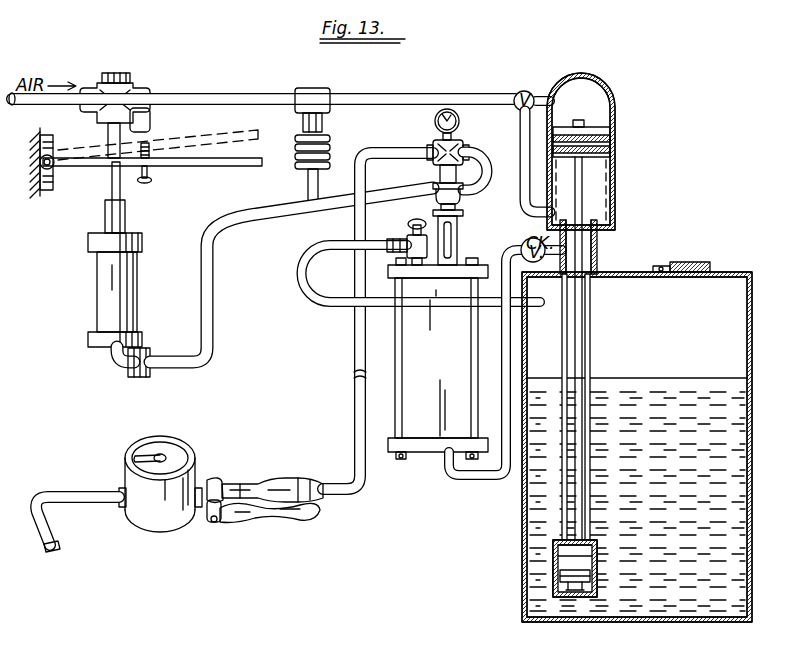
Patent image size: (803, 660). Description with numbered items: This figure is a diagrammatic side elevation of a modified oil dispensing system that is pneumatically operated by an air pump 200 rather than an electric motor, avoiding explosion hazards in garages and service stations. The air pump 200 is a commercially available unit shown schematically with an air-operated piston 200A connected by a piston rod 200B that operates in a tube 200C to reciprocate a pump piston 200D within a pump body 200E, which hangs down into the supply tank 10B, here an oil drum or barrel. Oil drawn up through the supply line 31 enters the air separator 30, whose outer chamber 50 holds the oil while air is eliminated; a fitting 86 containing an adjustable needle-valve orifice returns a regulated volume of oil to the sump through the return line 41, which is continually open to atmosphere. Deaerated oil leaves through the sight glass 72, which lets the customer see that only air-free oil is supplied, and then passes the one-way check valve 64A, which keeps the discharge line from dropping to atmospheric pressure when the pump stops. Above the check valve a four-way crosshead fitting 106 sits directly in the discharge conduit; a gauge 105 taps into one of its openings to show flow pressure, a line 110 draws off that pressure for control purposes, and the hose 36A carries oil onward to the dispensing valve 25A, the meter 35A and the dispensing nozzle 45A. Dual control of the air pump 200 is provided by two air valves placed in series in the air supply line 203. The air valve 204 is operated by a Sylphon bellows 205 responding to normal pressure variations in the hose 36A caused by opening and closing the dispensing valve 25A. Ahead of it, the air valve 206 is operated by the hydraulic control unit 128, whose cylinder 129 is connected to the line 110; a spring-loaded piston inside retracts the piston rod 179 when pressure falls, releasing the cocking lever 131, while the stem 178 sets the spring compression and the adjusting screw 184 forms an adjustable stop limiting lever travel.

The supply tank 10B is at (695, 357).
The dispensing valve 25A is at (232, 487).
The air separator 30 is at (441, 422).
The supply line 31 is at (462, 478).
The meter 35A is at (178, 456).
The hose 36A is at (358, 482).
The return line 41 is at (538, 307).
The dispensing nozzle 45A is at (56, 552).
The outer chamber 50 is at (448, 339).
The one-way check valve 64A is at (466, 200).
The sight glass 72 is at (458, 240).
The fitting 86 is at (406, 242).
The gauge 105 is at (434, 122).
The crosshead fitting 106 is at (462, 150).
The line 110 is at (262, 222).
The hydraulic control unit 128 is at (93, 357).
The cylinder 129 is at (89, 296).
The cocking lever 131 is at (243, 167).
The stem 178 is at (105, 213).
The piston rod 179 is at (124, 188).
The adjusting screw 184 is at (147, 146).
The air pump 200 is at (608, 186).
The air-operated piston 200A is at (596, 136).
The piston rod 200B is at (593, 247).
The tube 200C is at (588, 325).
The pump piston 200D is at (590, 580).
The pump body 200E is at (590, 548).
The air supply pipe 203 is at (222, 94).
The air valve 204 is at (326, 90).
The Sylphon bellows 205 is at (302, 172).
The air valve 206 is at (135, 86).